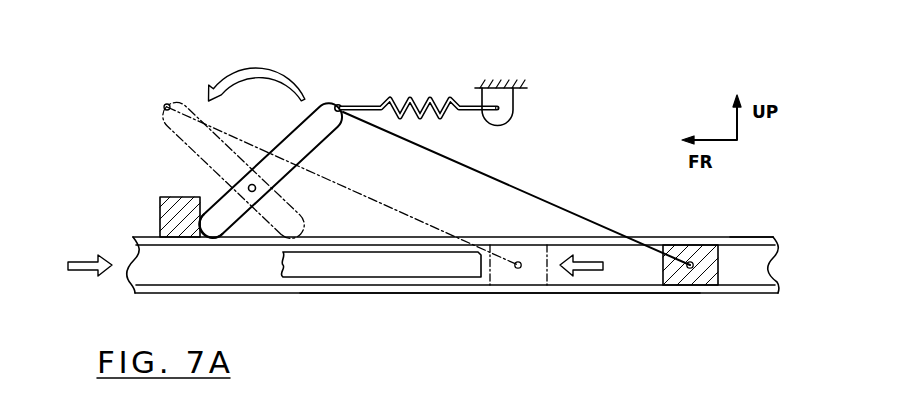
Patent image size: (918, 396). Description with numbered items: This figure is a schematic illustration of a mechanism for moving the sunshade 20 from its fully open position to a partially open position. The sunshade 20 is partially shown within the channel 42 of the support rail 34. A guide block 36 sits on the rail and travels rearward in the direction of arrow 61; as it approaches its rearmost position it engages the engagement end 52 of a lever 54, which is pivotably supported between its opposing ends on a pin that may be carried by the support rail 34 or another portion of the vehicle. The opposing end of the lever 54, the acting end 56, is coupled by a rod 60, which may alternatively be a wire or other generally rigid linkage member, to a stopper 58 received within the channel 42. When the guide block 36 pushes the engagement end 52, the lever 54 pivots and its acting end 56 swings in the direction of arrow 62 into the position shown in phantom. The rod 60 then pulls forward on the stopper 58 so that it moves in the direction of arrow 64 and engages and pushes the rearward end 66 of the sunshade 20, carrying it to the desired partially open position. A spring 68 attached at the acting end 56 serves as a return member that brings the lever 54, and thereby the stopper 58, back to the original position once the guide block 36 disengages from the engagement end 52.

The sunshade 20 is at (323, 268).
The support rail 34 is at (758, 297).
The guide block 36 is at (175, 197).
The channel 42 is at (752, 253).
The engagement end 52 is at (215, 228).
The lever 54 is at (290, 143).
The acting end 56 is at (341, 93).
The stopper 58 is at (705, 262).
The rod 60 is at (522, 190).
The arrow 61 is at (86, 258).
The arrow 62 is at (258, 68).
The arrow 64 is at (583, 277).
The rearward end 66 is at (475, 278).
The spring 68 is at (415, 98).